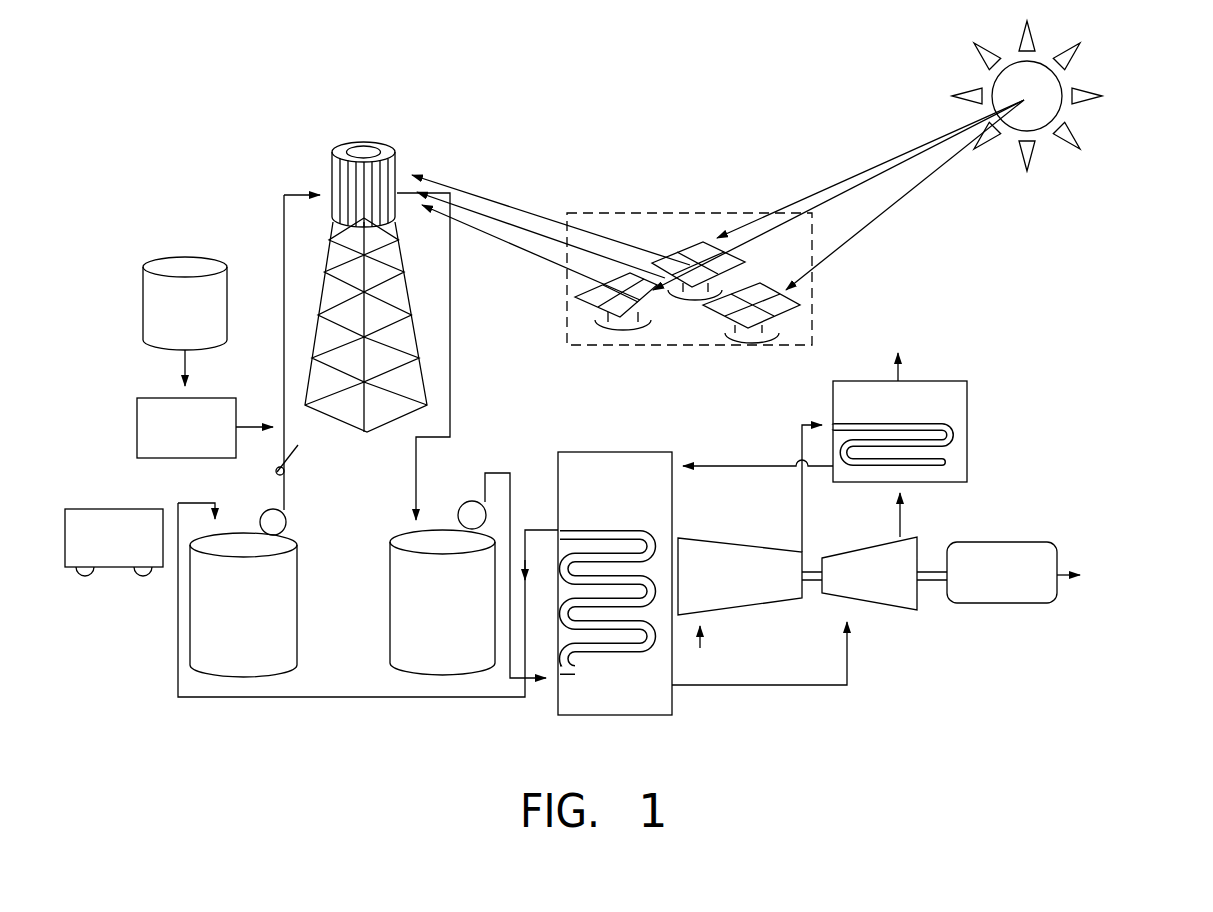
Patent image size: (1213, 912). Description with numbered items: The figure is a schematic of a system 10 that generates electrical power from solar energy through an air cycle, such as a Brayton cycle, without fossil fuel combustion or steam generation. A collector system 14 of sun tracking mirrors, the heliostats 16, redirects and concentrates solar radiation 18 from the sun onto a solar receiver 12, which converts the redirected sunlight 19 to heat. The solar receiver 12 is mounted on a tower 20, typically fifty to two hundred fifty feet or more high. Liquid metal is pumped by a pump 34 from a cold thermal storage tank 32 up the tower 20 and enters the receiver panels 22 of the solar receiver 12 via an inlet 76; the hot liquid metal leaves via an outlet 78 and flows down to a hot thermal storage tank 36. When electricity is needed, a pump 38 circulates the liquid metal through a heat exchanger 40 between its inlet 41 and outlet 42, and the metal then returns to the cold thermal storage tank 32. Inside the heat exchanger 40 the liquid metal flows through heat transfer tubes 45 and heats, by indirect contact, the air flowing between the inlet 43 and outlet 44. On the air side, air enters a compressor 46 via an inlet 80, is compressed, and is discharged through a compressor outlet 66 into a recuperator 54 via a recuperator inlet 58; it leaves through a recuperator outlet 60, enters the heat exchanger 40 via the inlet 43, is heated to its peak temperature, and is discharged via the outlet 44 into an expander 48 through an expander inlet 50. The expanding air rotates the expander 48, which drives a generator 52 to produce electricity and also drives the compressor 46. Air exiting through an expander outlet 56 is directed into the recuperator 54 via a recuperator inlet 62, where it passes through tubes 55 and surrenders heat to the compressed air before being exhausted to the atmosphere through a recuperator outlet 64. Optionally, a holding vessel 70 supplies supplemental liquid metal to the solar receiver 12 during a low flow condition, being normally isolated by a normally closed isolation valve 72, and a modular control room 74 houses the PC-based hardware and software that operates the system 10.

The system 10 is at (196, 70).
The solar receiver 12 is at (340, 141).
The collector system 14 is at (707, 212).
The heliostats 16 is at (693, 250).
The solar radiation 18 is at (917, 183).
The redirected sunlight 19 is at (478, 232).
The tower 20 is at (340, 425).
The receiver panels 22 is at (375, 162).
The cold thermal storage tank 32 is at (298, 570).
The pump 34 is at (268, 508).
The hot thermal storage tank 36 is at (390, 612).
The pump 38 is at (471, 501).
The heat exchanger 40 is at (610, 605).
The heat exchanger inlet 41 is at (553, 688).
The heat exchanger outlet 42 is at (556, 527).
The heat exchanger inlet 43 is at (673, 458).
The heat exchanger outlet 44 is at (673, 690).
The heat transfer tubes 45 is at (633, 680).
The compressor 46 is at (750, 547).
The expander 48 is at (918, 597).
The expander inlet 50 is at (852, 600).
The generator 52 is at (1023, 545).
The recuperator 54 is at (928, 431).
The tubes 55 is at (947, 458).
The expander outlet 56 is at (905, 538).
The recuperator inlet 58 is at (830, 422).
The recuperator outlet 60 is at (825, 470).
The recuperator inlet 62 is at (903, 483).
The recuperator outlet 64 is at (900, 378).
The compressor outlet 66 is at (803, 550).
The holding vessel 70 is at (178, 256).
The isolation valve 72 is at (160, 398).
The control room 74 is at (133, 570).
The inlet 76 is at (333, 190).
The outlet 78 is at (398, 196).
The inlet 80 is at (703, 617).